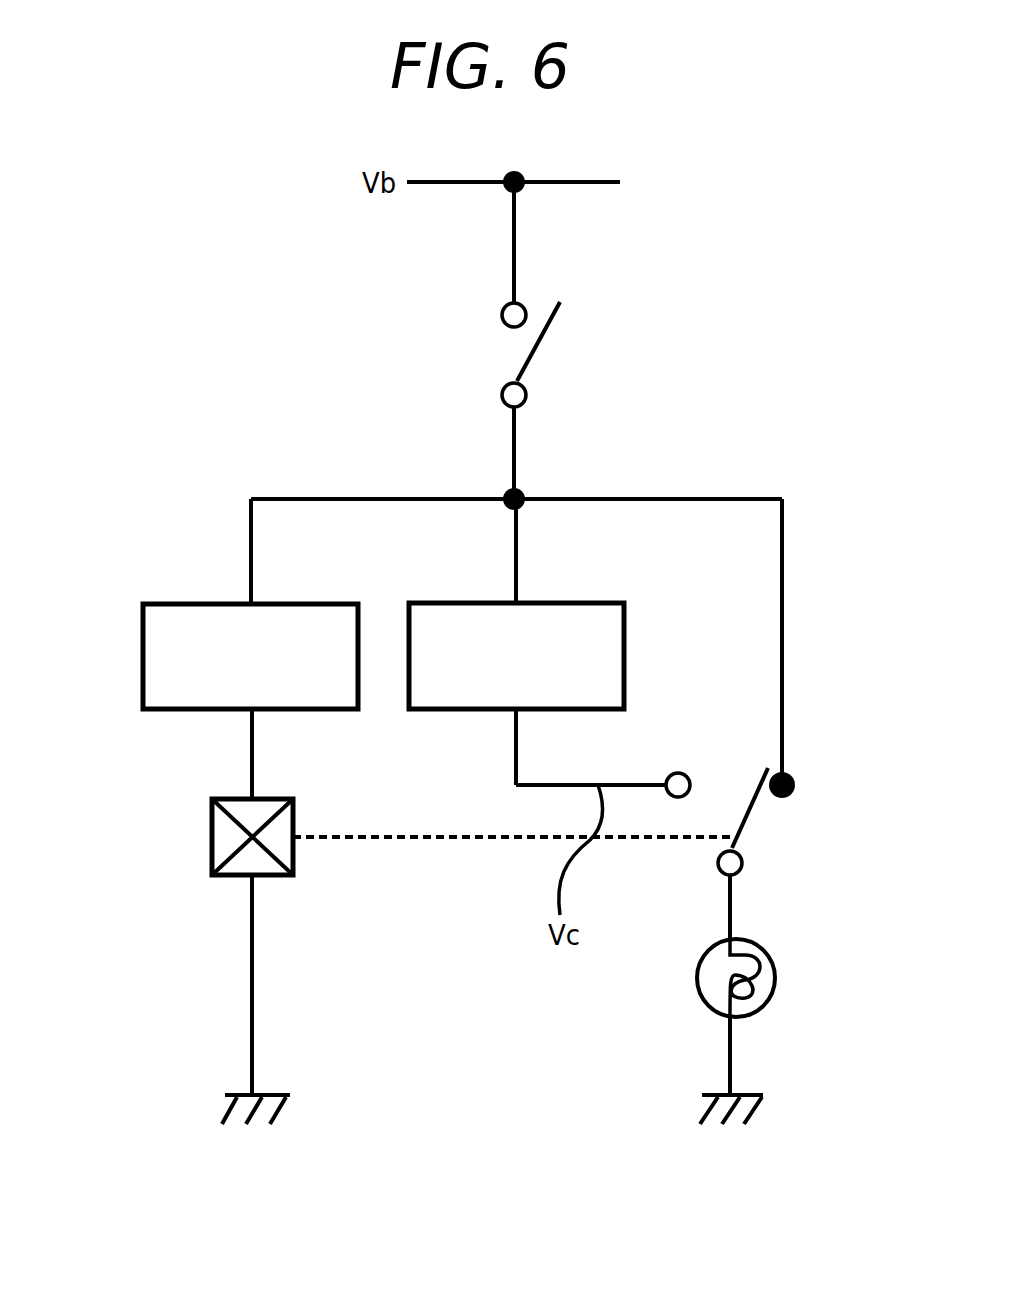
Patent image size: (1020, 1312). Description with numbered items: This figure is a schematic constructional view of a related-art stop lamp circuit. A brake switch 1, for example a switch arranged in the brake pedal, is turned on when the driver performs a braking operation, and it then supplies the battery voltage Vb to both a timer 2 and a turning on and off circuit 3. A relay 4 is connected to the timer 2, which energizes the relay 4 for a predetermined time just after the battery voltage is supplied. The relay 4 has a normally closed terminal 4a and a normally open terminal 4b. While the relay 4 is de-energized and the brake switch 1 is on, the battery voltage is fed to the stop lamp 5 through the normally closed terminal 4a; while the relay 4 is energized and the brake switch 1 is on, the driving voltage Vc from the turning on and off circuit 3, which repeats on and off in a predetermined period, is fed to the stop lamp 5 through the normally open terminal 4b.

The brake switch 1 is at (492, 354).
The timer 2 is at (143, 664).
The turning on and off circuit 3 is at (624, 638).
The relay 4 is at (212, 840).
The normally closed terminal 4a is at (795, 775).
The normally open terminal 4b is at (678, 772).
The stop lamp 5 is at (775, 975).